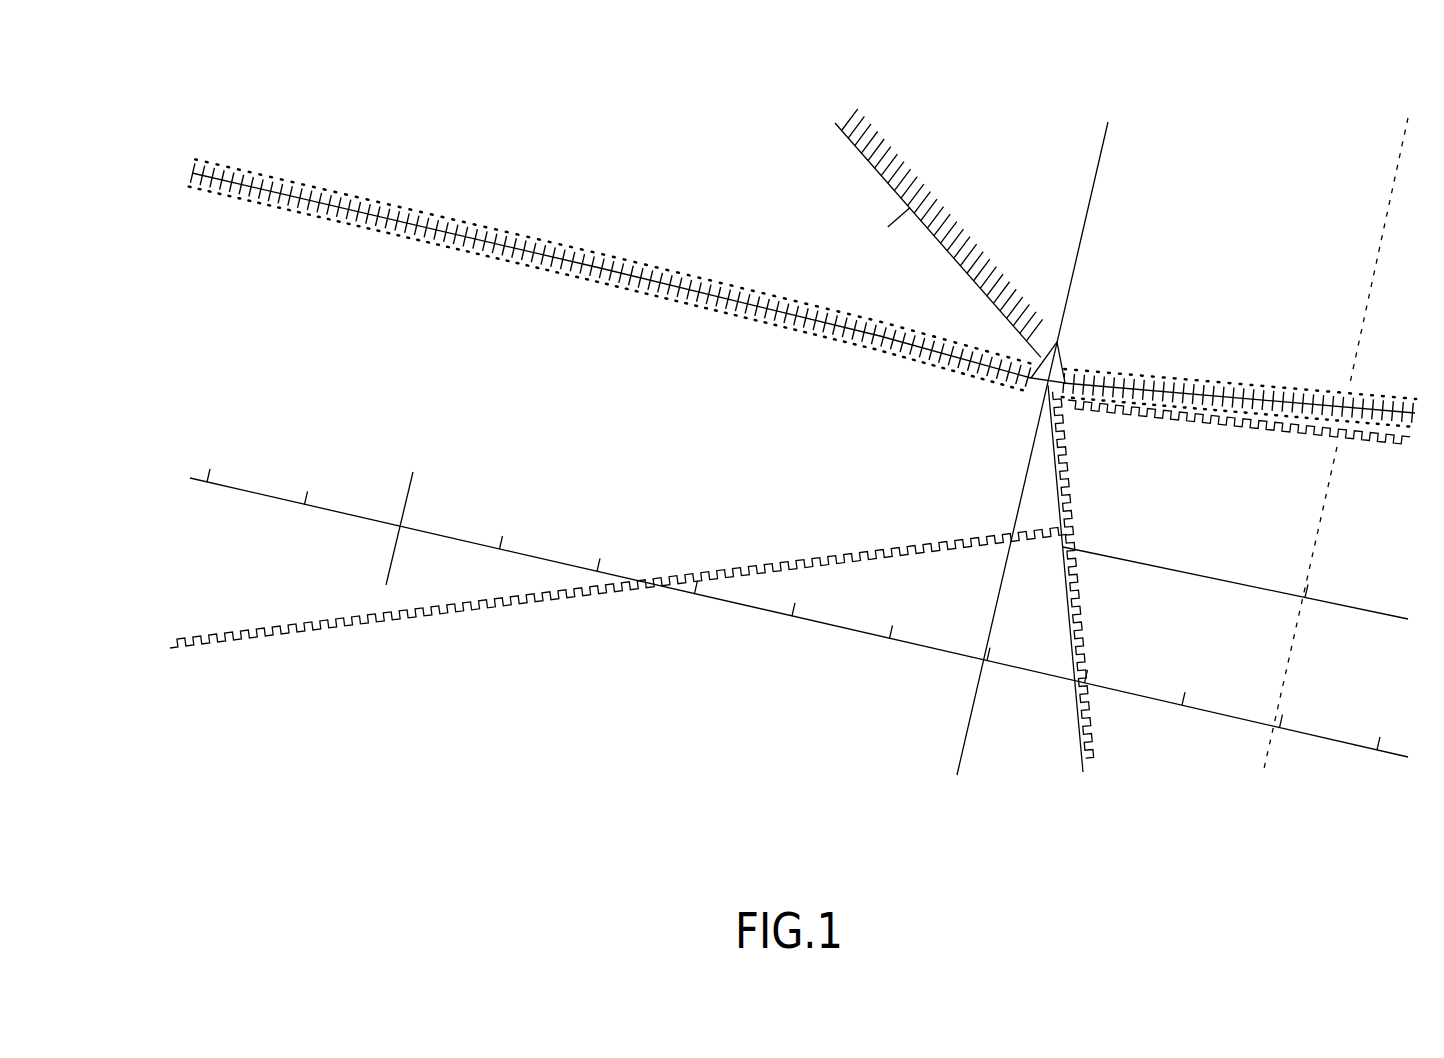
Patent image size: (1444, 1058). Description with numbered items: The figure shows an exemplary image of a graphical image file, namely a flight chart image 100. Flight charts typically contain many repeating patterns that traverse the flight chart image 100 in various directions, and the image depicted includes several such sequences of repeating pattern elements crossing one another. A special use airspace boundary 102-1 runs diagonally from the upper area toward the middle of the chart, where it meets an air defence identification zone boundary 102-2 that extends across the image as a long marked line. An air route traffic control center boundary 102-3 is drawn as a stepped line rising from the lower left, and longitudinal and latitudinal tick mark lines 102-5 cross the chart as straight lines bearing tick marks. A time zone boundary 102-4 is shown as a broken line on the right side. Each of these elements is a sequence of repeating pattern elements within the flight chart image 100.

The flight chart image 100 is at (250, 64).
The special use airspace (SUA) boundary 102-1 is at (882, 176).
The air defence identification zone (ADIZ) boundary 102-2 is at (771, 322).
The air route traffic control center (ARTCC) boundary 102-3 is at (247, 643).
The time zone boundary 102-4 is at (1316, 545).
The longitudinal and latitudinal tick mark lines 102-5 is at (845, 630).